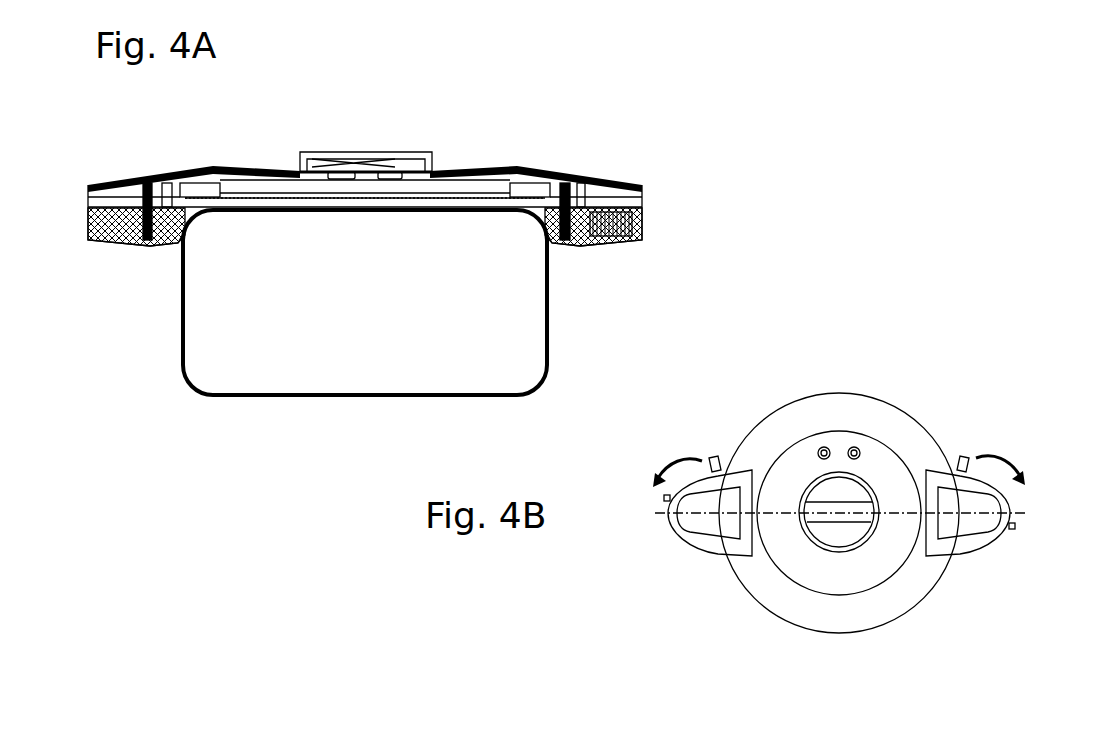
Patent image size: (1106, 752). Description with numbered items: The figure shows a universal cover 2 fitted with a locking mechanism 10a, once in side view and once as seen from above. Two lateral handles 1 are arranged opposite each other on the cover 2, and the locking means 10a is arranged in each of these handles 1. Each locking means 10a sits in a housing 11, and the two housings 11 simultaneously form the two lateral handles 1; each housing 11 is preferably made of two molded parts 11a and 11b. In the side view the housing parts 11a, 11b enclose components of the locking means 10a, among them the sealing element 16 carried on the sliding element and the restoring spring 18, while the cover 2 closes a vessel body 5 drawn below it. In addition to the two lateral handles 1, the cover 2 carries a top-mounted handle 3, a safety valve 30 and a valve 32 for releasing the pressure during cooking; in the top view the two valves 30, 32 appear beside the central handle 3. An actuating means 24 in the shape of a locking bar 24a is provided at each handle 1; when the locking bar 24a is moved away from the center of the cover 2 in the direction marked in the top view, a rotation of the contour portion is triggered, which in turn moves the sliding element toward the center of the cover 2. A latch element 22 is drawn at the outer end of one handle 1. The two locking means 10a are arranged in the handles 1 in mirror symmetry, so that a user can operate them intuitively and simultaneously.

In FIG. 4A, the lateral handle 1 is at (615, 208).
In FIG. 4B, the lateral handle 1 is at (883, 542).
In FIG. 4A, the universal cover 2 is at (569, 52).
In FIG. 4B, the universal cover 2 is at (739, 628).
In FIG. 4A, the top-mounted handle 3 is at (365, 132).
In FIG. 4B, the top-mounted handle 3 is at (867, 526).
In FIG. 4A, the container body 5 is at (346, 325).
In FIG. 4A, the locking mechanism 10a is at (423, 208).
In FIG. 4B, the housing 11 is at (987, 540).
In FIG. 4A, the molded housing part 11a is at (587, 243).
In FIG. 4A, the molded housing part 11b is at (600, 182).
In FIG. 4A, the sealing element 16 is at (563, 183).
In FIG. 4A, the restoring spring 18 is at (623, 245).
In FIG. 4B, the latch 22 is at (1014, 527).
In FIG. 4B, the actuating element 24 is at (892, 435).
In FIG. 4B, the locking bar 24a is at (963, 462).
In FIG. 4A, the safety valve 30 is at (413, 150).
In FIG. 4B, the safety valve 30 is at (857, 449).
In FIG. 4A, the valve 32 is at (321, 150).
In FIG. 4B, the valve 32 is at (833, 448).